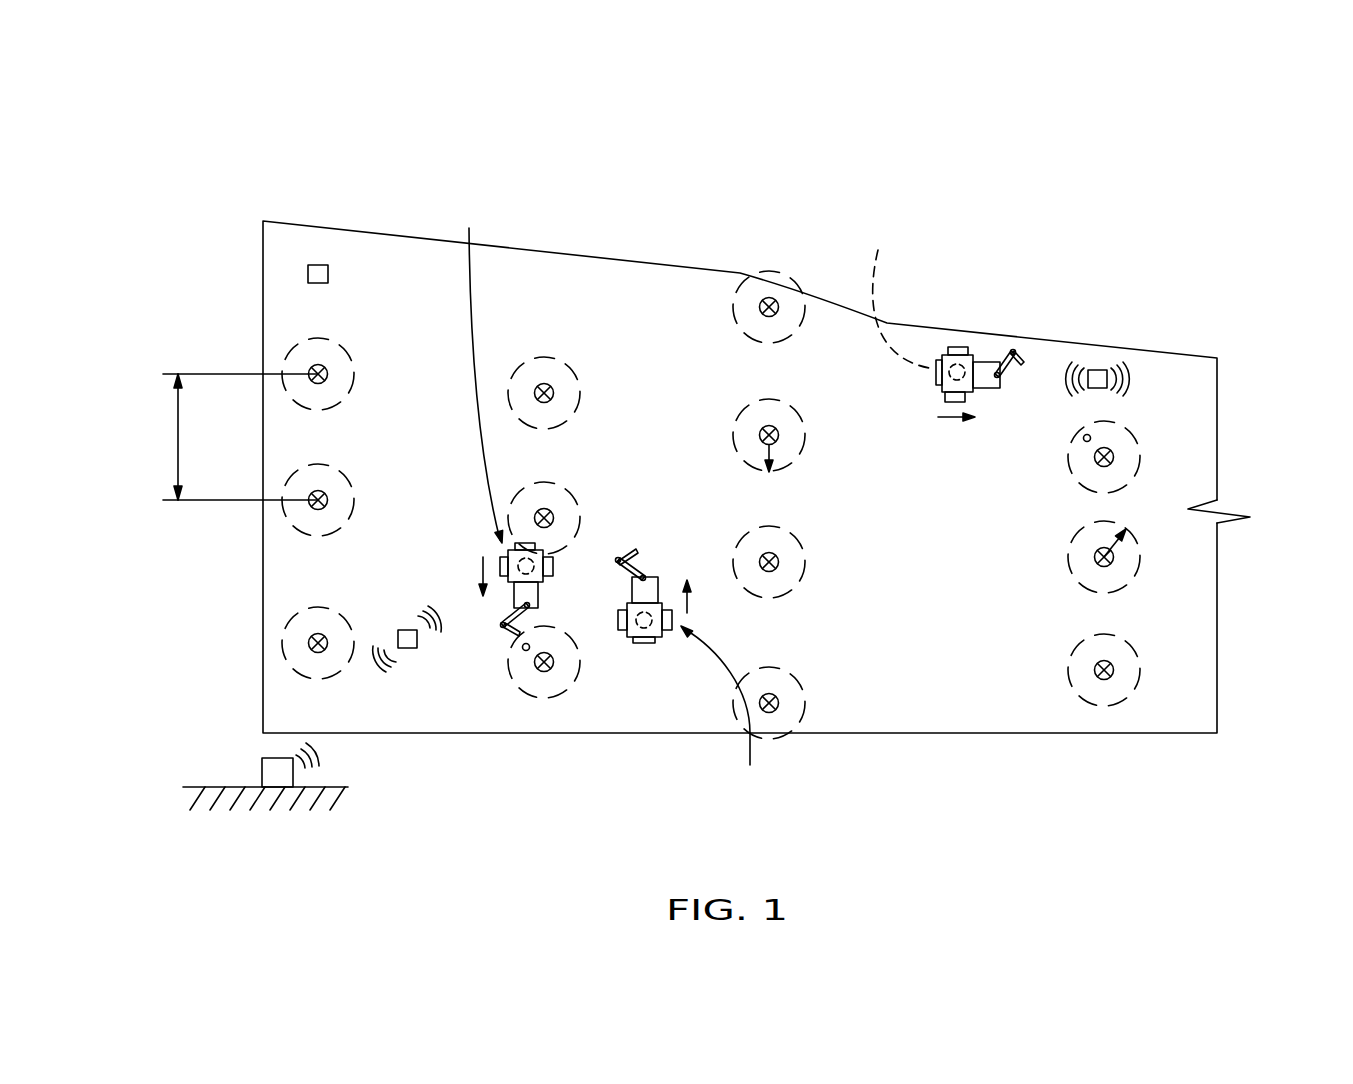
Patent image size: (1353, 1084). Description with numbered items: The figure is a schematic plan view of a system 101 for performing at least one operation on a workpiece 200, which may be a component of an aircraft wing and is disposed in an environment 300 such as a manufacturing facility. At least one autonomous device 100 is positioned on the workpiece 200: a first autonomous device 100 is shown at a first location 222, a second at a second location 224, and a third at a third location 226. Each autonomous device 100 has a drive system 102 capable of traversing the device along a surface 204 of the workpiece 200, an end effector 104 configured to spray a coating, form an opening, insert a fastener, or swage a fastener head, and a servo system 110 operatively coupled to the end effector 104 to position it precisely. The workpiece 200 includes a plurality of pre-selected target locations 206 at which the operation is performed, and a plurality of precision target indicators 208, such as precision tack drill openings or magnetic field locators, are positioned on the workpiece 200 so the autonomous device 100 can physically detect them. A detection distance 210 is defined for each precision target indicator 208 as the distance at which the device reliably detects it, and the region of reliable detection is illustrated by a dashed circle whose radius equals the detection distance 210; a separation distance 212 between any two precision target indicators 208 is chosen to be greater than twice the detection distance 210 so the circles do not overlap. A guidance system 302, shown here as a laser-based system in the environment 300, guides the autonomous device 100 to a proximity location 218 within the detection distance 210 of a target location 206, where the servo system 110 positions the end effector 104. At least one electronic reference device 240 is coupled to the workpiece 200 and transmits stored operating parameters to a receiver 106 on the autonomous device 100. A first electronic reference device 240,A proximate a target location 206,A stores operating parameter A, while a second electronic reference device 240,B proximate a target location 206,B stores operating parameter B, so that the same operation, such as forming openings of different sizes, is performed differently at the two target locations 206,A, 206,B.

The autonomous device 100 is at (783, 523).
The system 101 is at (580, 165).
The drive system 102 is at (953, 348).
The end effector 104 is at (1021, 362).
The receiver 106 is at (897, 293).
The servo system 110 is at (1012, 350).
The workpiece 200 is at (1138, 733).
The surface 204 is at (929, 533).
The target location 206 is at (758, 424).
The target location A 206,A is at (538, 697).
The target location B 206,B is at (1125, 456).
The precision target indicator 208 is at (780, 432).
The detection distance 210 is at (768, 446).
The separation distance 212 is at (178, 427).
The proximity location 218 is at (523, 650).
The first location 222 is at (474, 397).
The second location 224 is at (726, 688).
The third location 226 is at (940, 349).
The electronic reference device 240 is at (318, 264).
The first electronic reference device 240,A is at (407, 648).
The second electronic reference device 240,B is at (1100, 368).
The environment 300 is at (225, 787).
The guidance system 302 is at (262, 758).